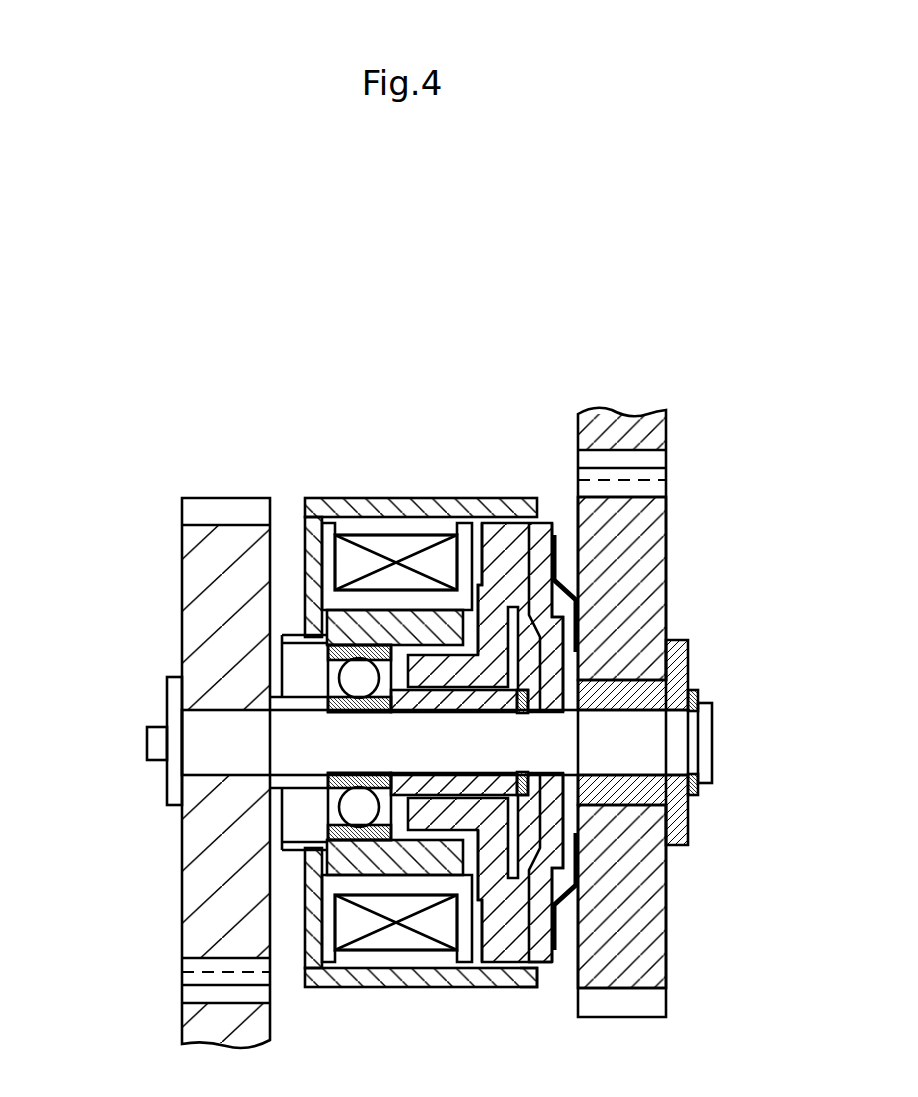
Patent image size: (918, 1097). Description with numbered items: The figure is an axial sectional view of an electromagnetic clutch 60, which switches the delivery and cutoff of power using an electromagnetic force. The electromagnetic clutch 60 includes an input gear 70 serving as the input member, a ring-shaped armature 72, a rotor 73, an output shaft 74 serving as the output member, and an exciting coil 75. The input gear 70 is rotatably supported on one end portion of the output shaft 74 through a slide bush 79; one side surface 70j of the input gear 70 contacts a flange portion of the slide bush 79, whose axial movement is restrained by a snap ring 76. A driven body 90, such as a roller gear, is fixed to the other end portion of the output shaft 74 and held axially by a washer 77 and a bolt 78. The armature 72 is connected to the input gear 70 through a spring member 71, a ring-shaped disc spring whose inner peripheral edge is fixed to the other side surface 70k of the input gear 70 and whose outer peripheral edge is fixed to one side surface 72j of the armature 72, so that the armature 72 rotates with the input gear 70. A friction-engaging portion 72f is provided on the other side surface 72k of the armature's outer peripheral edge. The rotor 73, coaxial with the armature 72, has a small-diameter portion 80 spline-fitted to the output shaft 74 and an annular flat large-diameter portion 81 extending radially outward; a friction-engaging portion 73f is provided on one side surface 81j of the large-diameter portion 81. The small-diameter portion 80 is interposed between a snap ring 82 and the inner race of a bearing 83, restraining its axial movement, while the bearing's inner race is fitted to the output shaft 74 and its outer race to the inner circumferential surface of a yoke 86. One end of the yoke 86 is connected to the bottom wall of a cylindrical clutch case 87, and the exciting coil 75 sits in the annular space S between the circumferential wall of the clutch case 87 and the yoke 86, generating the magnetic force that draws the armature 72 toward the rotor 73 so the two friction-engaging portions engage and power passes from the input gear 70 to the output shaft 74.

The electromagnetic clutch 60 is at (162, 428).
The input gear 70 is at (657, 735).
The one side surface of the input gear 70j is at (667, 598).
The other side surface of the input gear 70k is at (580, 990).
The spring member 71 is at (568, 585).
The armature 72 is at (519, 743).
The friction-engaging portion 72f is at (512, 565).
The other side surface of the armature 72k is at (525, 555).
The one side surface of the armature 72j is at (563, 585).
The rotor 73 is at (407, 762).
The friction-engaging portion 73f is at (538, 968).
The output shaft 74 is at (218, 728).
The exciting coil 75 is at (348, 630).
The snap ring 76 is at (698, 690).
The washer 77 is at (172, 702).
The bolt 78 is at (155, 745).
The slide bush 79 is at (690, 641).
The small-diameter portion 80 is at (437, 822).
The large-diameter portion 81 is at (507, 900).
The one side surface of the large-diameter portion 81j is at (548, 958).
The snap ring 82 is at (530, 795).
The bearing 83 is at (328, 803).
The yoke 86 is at (312, 560).
The clutch case 87 is at (421, 739).
The driven body 90 is at (205, 588).
The annular space S is at (428, 762).